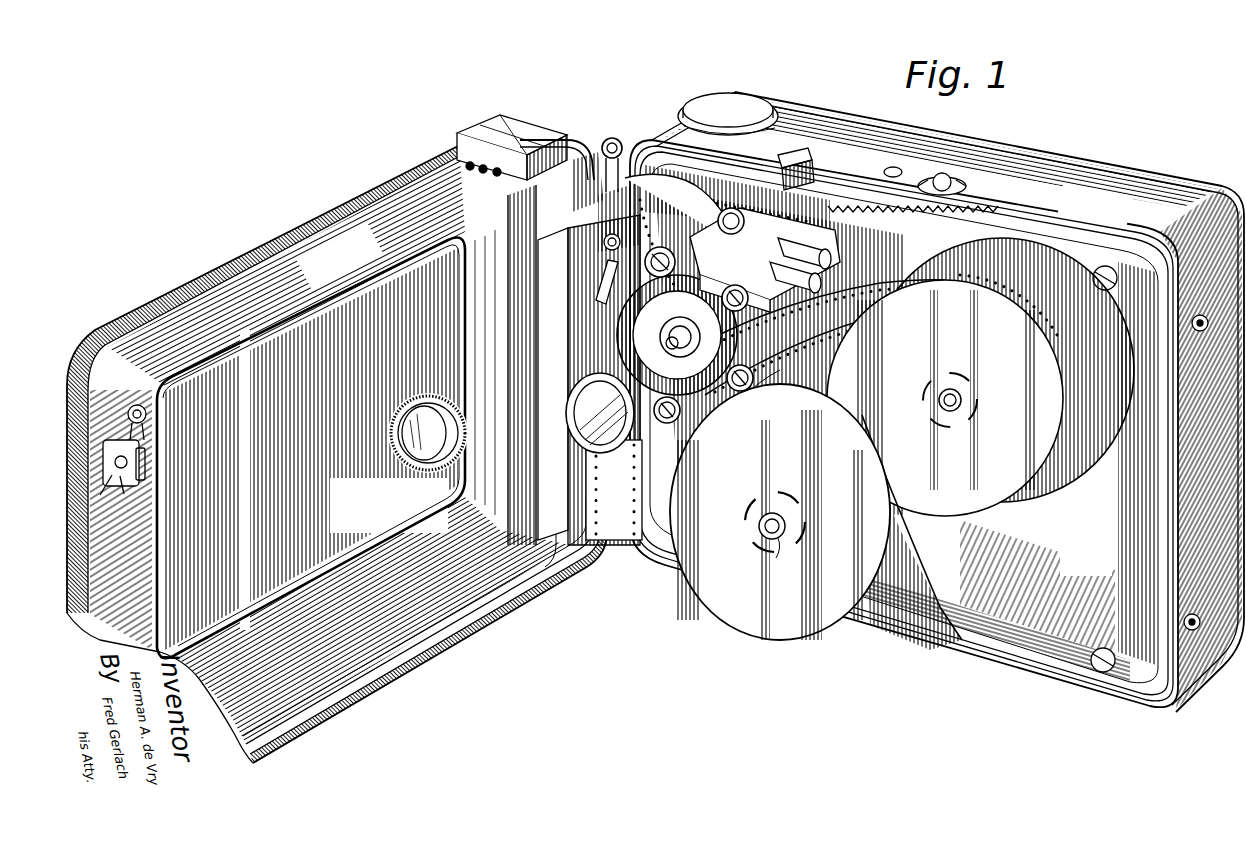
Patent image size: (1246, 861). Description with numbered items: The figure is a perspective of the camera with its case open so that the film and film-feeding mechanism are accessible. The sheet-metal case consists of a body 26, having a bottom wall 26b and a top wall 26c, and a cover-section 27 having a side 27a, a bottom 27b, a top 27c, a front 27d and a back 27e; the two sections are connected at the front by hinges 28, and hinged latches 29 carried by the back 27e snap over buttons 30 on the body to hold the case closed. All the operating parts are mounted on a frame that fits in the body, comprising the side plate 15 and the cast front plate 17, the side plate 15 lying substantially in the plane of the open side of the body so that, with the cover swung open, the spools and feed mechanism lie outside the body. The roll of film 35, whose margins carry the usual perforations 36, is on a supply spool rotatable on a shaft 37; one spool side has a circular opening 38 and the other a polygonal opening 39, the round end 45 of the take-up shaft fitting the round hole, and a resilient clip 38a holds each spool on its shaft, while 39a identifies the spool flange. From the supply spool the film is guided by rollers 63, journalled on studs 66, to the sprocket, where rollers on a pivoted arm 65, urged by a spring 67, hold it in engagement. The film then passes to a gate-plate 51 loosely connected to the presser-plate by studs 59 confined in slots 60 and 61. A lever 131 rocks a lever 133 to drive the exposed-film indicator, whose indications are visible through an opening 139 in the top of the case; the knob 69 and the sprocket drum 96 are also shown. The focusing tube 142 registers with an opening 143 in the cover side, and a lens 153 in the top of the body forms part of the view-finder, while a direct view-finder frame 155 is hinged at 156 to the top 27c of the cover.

The side plate 15 is at (905, 430).
The front plate 17 is at (576, 575).
The body 26 is at (1116, 162).
The bottom wall 26b is at (1128, 708).
The top wall 26c is at (939, 161).
The cover-section 27 is at (337, 454).
The side 27a is at (311, 448).
The bottom 27b is at (468, 605).
The top 27c is at (286, 272).
The front 27d is at (580, 148).
The back 27e is at (136, 560).
The hinges 28 is at (620, 138).
The hinged latches 29 is at (124, 490).
The buttons 30 is at (1203, 316).
The film 35 is at (868, 290).
The perforations 36 is at (890, 292).
The shaft 37 is at (962, 404).
The circular opening 38 is at (980, 377).
The resilient strip or clip 38a is at (772, 559).
The polygonal opening 39 is at (816, 535).
The reel flange 39a is at (818, 625).
The round end portion 45 is at (790, 528).
The gate-plate 51 is at (553, 384).
The studs 59 is at (600, 300).
The slot 60 is at (606, 282).
The slot 61 is at (622, 243).
The rollers 63 is at (822, 196).
The arm 65 is at (742, 315).
The stud 66 is at (790, 275).
The spring 67 is at (876, 164).
The winding knob 69 is at (718, 120).
The sprocket drum 96 is at (677, 335).
The lever 131 is at (800, 172).
The lever 133 is at (790, 155).
The opening 139 is at (960, 178).
The tube 142 is at (600, 448).
The opening 143 is at (466, 404).
The lens 153 is at (738, 108).
The frame 155 is at (524, 136).
The hinge 156 is at (470, 170).